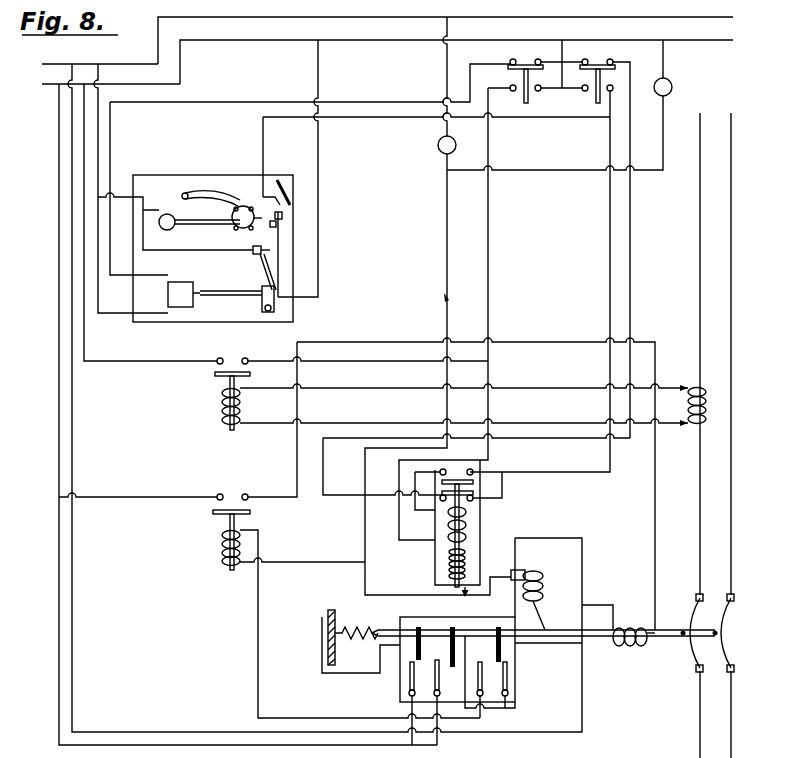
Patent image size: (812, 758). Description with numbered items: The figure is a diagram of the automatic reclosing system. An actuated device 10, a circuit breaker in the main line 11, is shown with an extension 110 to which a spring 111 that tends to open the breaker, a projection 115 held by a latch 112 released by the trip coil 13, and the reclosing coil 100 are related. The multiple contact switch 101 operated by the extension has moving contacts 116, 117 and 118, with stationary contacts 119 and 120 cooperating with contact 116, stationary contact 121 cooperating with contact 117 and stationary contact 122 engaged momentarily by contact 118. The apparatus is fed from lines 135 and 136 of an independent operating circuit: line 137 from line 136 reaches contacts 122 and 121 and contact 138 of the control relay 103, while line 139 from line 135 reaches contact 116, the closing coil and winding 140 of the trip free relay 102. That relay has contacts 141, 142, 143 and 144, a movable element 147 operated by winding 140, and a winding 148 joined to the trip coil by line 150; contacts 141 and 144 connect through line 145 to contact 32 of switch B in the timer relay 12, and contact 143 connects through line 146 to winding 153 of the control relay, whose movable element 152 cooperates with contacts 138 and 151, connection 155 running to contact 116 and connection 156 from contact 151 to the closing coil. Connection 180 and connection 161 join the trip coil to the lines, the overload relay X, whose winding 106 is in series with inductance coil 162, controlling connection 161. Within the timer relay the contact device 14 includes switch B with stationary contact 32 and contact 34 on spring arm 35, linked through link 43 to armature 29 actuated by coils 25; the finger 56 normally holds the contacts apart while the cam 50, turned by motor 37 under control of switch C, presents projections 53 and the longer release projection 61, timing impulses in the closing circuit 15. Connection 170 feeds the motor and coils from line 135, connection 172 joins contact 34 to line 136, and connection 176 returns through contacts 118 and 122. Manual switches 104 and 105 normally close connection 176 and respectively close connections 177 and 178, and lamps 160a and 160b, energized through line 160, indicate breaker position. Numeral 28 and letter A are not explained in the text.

The actuated device 10 is at (720, 598).
The main line 11 is at (703, 258).
The timer relay 12 is at (171, 323).
The trip coil 13 is at (545, 585).
The contact device 14 is at (229, 184).
The closing circuit 15 is at (316, 133).
The coils 25 is at (180, 294).
The bracket 28 is at (196, 302).
The armature 29 is at (204, 291).
The stationary contact 32 is at (277, 224).
The contact 34 is at (283, 214).
The spring arm 35 is at (281, 240).
The motor 37 is at (173, 228).
The link 43 is at (266, 290).
The cam 50 is at (250, 228).
The cam projections 53 is at (267, 196).
The finger 56 is at (292, 196).
The cam projection 61 is at (244, 206).
The reclosing coil 100 is at (636, 645).
The multiple contact switch 101 is at (454, 706).
The trip free relay 102 is at (485, 531).
The control relay 103 is at (231, 570).
The manual switch 104 is at (512, 58).
The manual switch 105 is at (600, 59).
The winding 106 is at (222, 405).
The extension 110 is at (668, 640).
The spring 111 is at (357, 628).
The latch 112 is at (533, 569).
The projection 115 is at (537, 602).
The contact 116 is at (502, 658).
The contact 117 is at (447, 660).
The contact 118 is at (410, 665).
The stationary contact 119 is at (508, 681).
The stationary contact 120 is at (484, 697).
The stationary contact 121 is at (421, 644).
The stationary contact 122 is at (409, 694).
The line 135 is at (206, 19).
The line 136 is at (270, 41).
The line 137 is at (60, 407).
The contact 138 is at (219, 494).
The line 139 is at (73, 432).
The winding 140 is at (467, 522).
The contact 141 is at (473, 470).
The contact 142 is at (440, 471).
The contact 143 is at (441, 501).
The contact 144 is at (474, 499).
The line 145 is at (392, 118).
The line 146 is at (291, 561).
The movable element 147 is at (457, 479).
The winding 148 is at (466, 562).
The line 150 is at (414, 556).
The contact 151 is at (248, 495).
The movable element 152 is at (224, 518).
The winding 153 is at (222, 548).
The connection 155 is at (257, 660).
The connection 156 is at (356, 342).
The line 160 is at (446, 190).
The signal lamp 160a is at (440, 148).
The signal lamp 160b is at (673, 87).
The connection 161 is at (85, 362).
The inductance coil 162 is at (708, 405).
The connection 170 is at (99, 133).
The connection 172 is at (319, 285).
The connection 176 is at (200, 103).
The connection 177 is at (489, 190).
The connection 178 is at (608, 106).
The connection 180 is at (511, 584).
The arrow direction A is at (161, 182).
The switch B is at (290, 208).
The switch C is at (282, 258).
The overload relay X is at (221, 421).